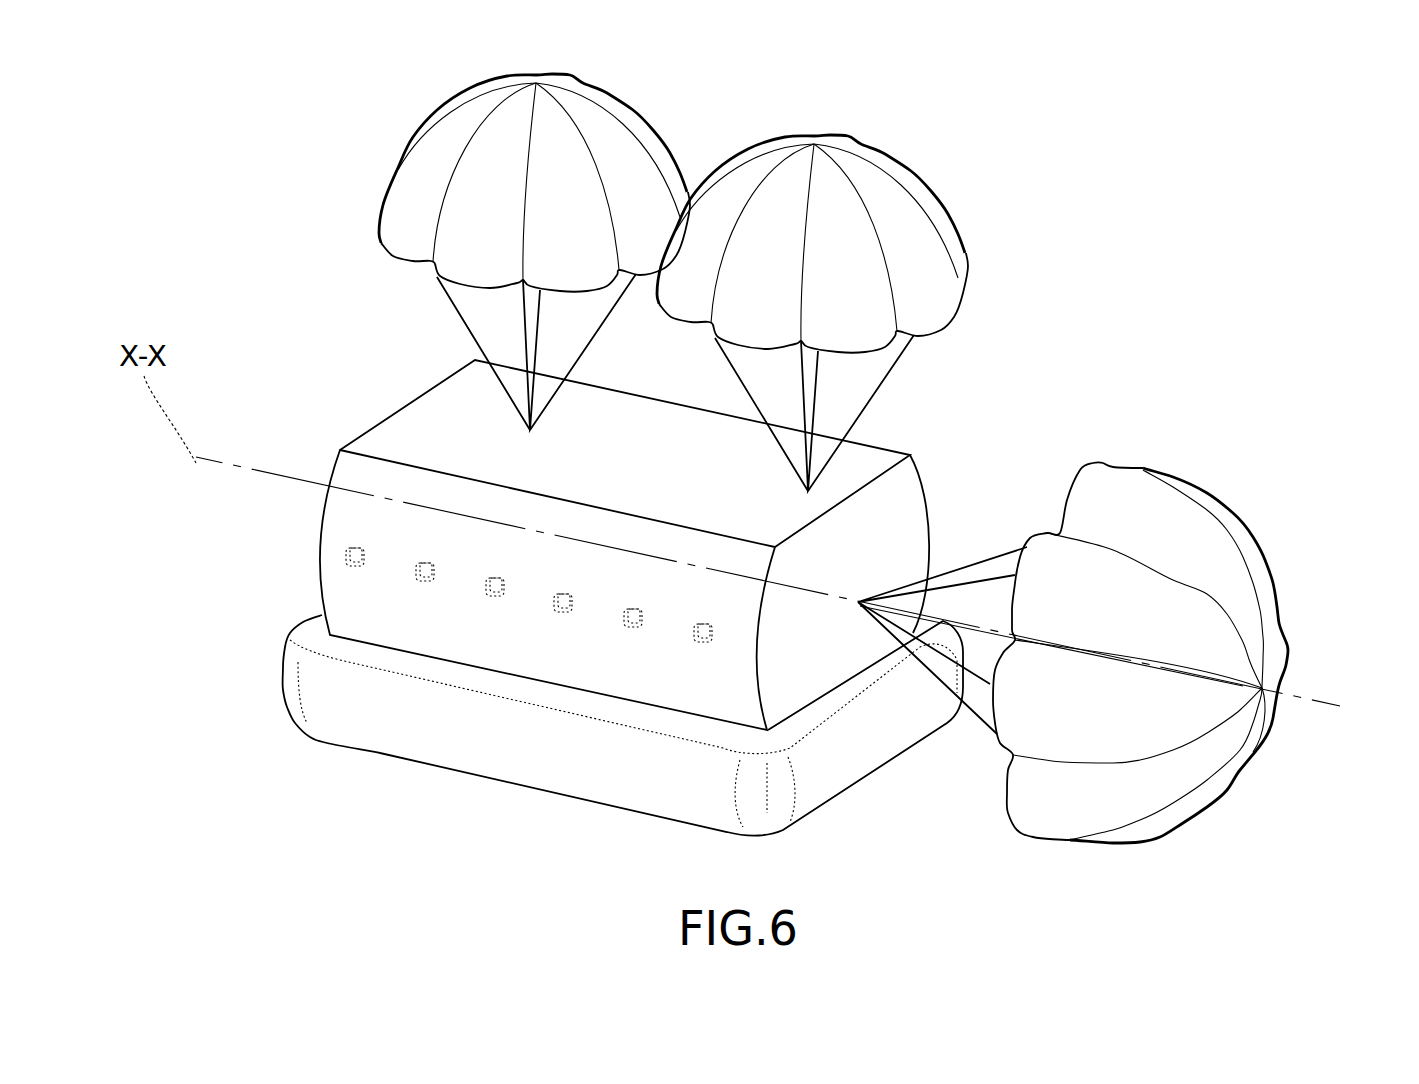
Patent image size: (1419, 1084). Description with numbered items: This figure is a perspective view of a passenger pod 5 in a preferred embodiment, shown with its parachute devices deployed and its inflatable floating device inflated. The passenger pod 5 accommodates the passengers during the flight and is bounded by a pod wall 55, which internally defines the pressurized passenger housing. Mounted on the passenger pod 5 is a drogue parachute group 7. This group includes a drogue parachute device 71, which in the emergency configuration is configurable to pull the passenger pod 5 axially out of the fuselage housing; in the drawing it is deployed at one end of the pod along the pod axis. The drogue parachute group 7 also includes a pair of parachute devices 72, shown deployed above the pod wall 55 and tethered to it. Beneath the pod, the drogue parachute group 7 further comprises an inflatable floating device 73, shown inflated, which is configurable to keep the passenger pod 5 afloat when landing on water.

The passenger pod 5 is at (1245, 226).
The drogue parachute group 7 is at (1159, 396).
The pod wall 55 is at (411, 451).
The drogue parachute device 71 is at (1273, 558).
The parachute device 72 is at (363, 154).
The inflatable floating device 73 is at (382, 752).